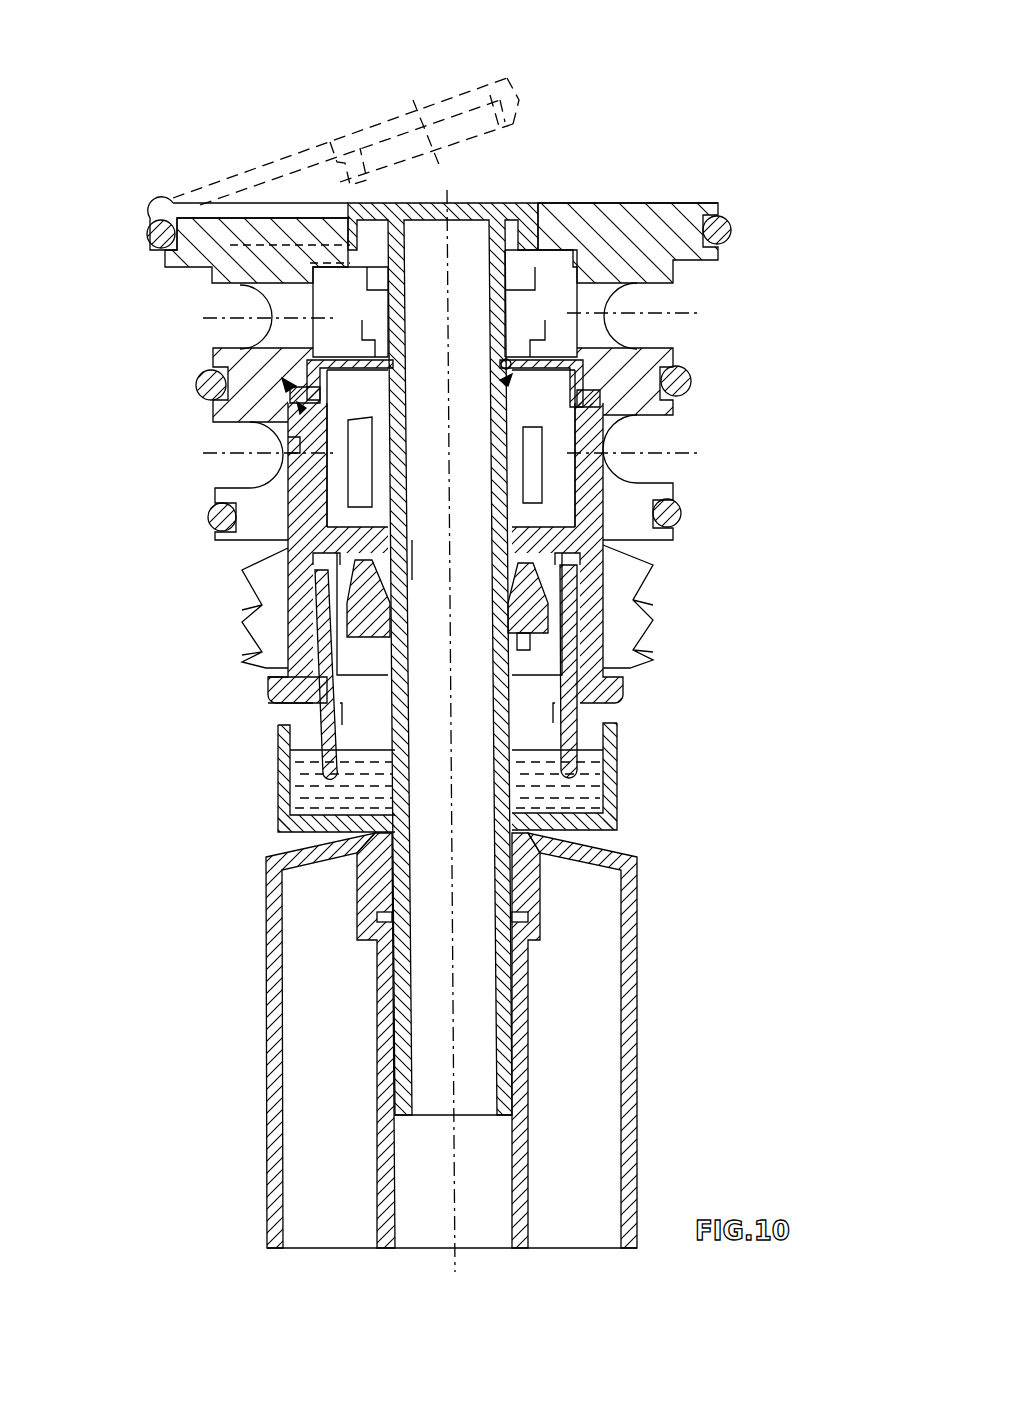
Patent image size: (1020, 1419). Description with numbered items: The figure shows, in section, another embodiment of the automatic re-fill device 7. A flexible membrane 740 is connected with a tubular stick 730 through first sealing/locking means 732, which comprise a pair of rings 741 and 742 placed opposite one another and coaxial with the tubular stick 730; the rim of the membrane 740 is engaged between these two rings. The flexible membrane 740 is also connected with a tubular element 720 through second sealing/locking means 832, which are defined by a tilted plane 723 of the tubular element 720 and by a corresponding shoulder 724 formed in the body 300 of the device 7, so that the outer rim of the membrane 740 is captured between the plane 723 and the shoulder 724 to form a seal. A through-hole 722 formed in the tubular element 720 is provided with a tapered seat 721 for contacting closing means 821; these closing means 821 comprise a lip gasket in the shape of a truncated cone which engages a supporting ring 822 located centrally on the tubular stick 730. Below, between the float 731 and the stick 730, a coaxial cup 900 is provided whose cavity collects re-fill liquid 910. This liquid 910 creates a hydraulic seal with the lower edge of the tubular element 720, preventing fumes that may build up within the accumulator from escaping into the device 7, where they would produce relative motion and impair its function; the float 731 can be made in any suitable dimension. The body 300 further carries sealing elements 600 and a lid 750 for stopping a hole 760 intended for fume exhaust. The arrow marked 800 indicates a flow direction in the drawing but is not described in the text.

The device 7 is at (742, 96).
The body 300 is at (240, 265).
The sealing elements 600 is at (728, 222).
The tubular element 720 is at (580, 547).
The tapered seat 721 is at (315, 577).
The through-hole 722 is at (365, 561).
The tilted plane 723 is at (268, 466).
The shoulder 724 is at (240, 350).
The tubular stick 730 is at (503, 980).
The float 731 is at (628, 970).
The first sealing/locking means 732 is at (585, 220).
The flexible membrane 740 is at (565, 355).
The ring 741 is at (527, 265).
The ring 742 is at (512, 420).
The lid 750 is at (400, 207).
The hole 760 is at (483, 203).
The flow path 800 is at (507, 570).
The closing means 821 is at (295, 693).
The supporting ring 822 is at (518, 650).
The second sealing/locking means 832 is at (278, 403).
The cup 900 is at (303, 822).
The re-fill liquid 910 is at (587, 783).